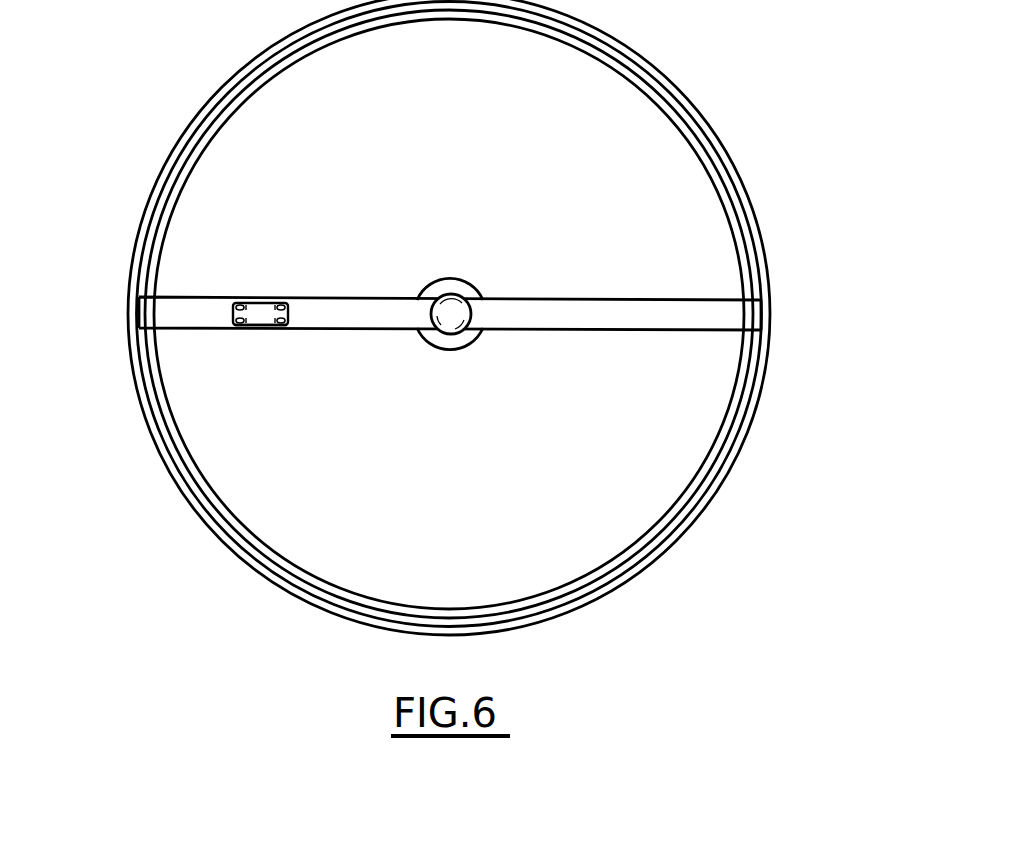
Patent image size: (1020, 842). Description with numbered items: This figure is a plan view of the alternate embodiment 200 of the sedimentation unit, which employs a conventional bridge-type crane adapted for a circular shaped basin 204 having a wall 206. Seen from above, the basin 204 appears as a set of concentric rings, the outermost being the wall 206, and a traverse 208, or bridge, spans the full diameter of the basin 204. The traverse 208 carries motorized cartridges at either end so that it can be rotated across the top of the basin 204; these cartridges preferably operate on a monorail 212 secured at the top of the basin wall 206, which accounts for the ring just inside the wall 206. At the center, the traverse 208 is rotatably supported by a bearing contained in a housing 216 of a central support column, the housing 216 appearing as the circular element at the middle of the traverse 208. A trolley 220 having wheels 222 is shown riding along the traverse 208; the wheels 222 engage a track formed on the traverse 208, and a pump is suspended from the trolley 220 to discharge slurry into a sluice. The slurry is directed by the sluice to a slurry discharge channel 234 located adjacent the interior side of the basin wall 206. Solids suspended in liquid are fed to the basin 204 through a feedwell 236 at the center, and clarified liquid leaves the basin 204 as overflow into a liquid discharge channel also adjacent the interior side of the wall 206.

The alternate embodiment 200 is at (148, 515).
The basin 204 is at (473, 500).
The wall 206 is at (763, 230).
The traverse 208 is at (593, 299).
The monorail 212 is at (717, 145).
The housing 216 is at (450, 336).
The trolley 220 is at (257, 312).
The wheels 222 is at (240, 328).
The slurry discharge channel 234 is at (648, 90).
The feedwell 236 is at (450, 277).